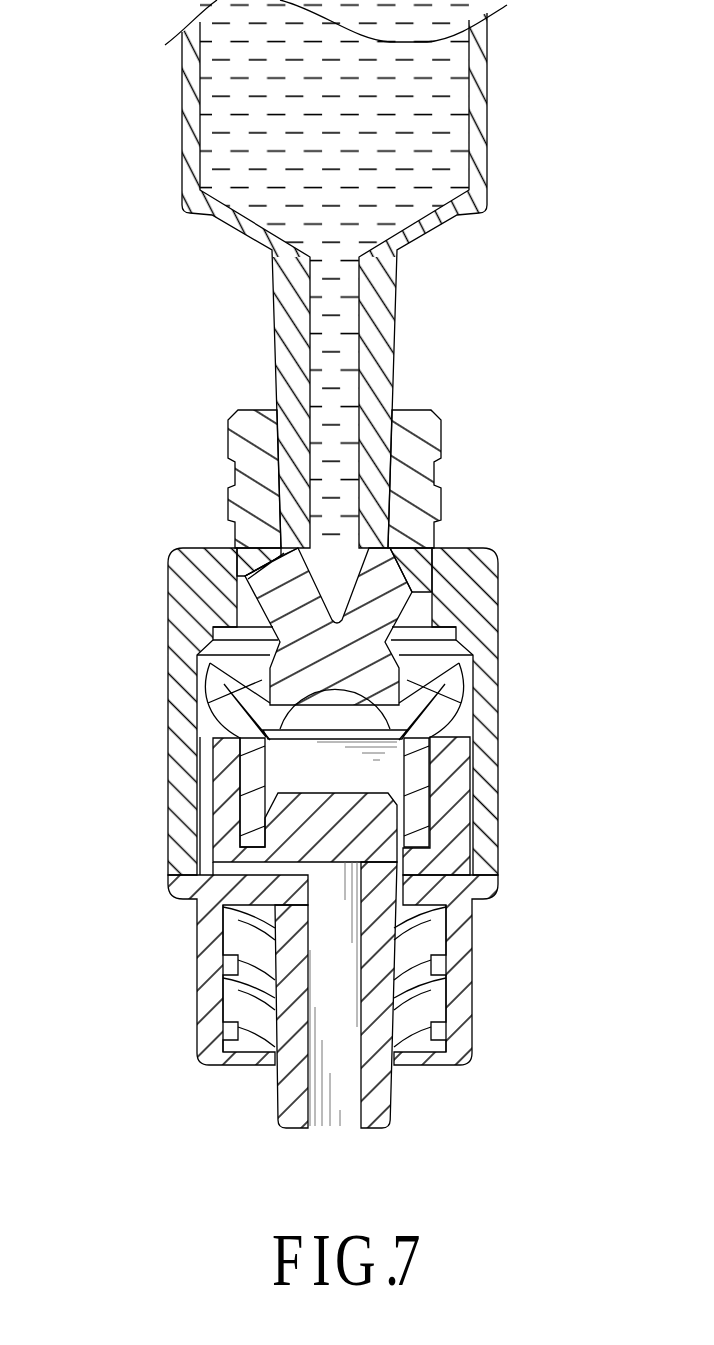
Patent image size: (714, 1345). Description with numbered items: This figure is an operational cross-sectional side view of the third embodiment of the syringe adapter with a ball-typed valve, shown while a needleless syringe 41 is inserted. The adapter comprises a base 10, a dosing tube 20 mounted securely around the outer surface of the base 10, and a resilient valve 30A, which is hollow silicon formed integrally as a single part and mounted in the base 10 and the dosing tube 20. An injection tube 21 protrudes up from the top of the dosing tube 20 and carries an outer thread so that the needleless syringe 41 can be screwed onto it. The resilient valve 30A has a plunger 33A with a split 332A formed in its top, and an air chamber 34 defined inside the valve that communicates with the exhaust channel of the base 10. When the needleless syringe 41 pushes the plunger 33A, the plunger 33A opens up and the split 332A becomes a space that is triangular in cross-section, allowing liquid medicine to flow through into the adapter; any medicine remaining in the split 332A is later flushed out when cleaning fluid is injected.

The needleless syringe 41 is at (383, 303).
The injection tube 21 is at (405, 475).
The dosing tube 20 is at (182, 737).
The plunger 33A is at (390, 588).
The split 332A is at (311, 575).
The resilient valve 30A is at (463, 718).
The air chamber 34 is at (285, 758).
The base 10 is at (460, 997).